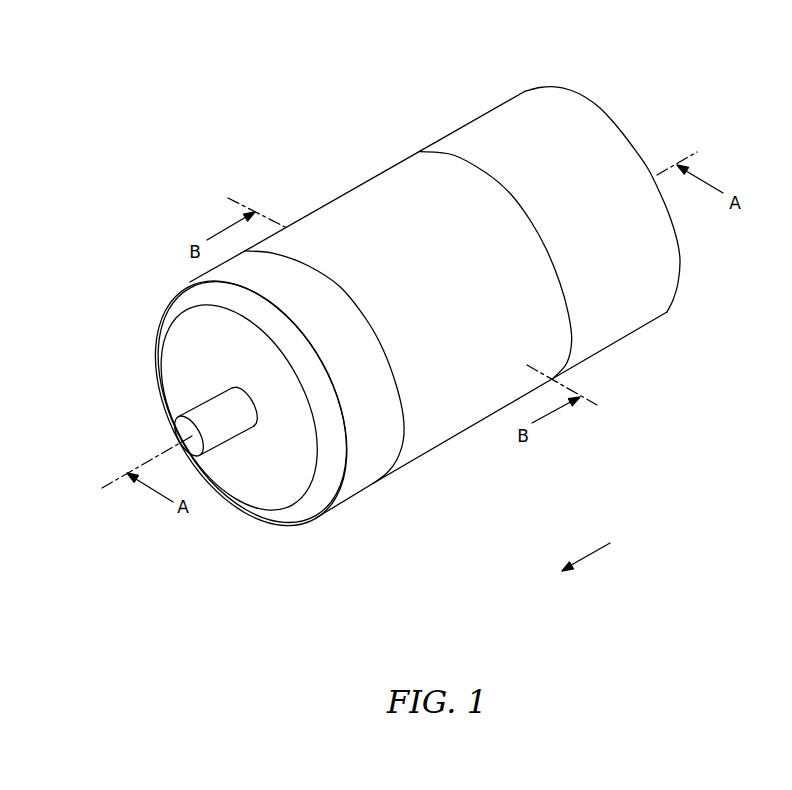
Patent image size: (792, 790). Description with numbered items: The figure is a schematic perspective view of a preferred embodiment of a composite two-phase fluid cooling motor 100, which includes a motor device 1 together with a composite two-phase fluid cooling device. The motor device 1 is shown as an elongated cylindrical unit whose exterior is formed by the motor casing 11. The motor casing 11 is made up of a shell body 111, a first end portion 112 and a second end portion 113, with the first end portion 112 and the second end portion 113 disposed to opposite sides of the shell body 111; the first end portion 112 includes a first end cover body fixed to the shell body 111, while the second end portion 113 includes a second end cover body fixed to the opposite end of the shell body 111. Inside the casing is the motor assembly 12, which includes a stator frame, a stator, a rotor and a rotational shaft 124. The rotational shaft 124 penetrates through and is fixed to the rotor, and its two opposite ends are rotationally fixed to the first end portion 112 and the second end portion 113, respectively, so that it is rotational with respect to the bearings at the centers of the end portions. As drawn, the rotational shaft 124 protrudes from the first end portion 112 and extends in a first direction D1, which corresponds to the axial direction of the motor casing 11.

The composite two-phase fluid cooling motor 100 is at (368, 113).
The motor device 1 is at (554, 84).
The motor casing 11 is at (385, 545).
The shell body 111 is at (448, 423).
The first end portion 112 is at (353, 473).
The second end portion 113 is at (608, 327).
The motor assembly 12 is at (188, 405).
The rotational shaft 124 is at (213, 440).
The first direction D1 is at (586, 546).